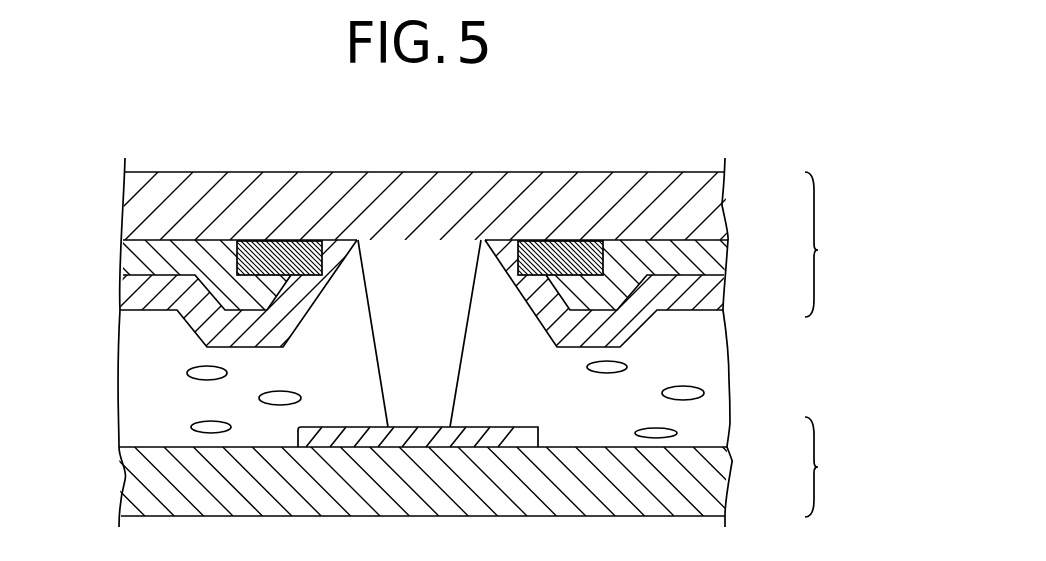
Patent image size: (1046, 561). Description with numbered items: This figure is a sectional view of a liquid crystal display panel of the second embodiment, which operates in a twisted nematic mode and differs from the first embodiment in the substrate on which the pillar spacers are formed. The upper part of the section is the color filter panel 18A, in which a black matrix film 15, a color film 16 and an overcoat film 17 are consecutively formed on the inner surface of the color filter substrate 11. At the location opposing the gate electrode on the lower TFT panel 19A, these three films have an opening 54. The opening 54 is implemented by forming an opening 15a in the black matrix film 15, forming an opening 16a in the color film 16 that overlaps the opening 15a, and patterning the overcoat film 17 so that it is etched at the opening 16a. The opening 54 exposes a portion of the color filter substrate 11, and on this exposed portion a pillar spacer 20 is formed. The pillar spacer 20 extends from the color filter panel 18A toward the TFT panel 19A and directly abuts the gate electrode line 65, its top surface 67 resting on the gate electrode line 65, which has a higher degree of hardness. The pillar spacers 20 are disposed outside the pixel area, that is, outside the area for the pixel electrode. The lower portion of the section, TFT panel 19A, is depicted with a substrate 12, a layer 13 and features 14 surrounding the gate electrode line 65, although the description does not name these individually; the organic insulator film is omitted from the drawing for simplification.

The color filter substrate 11 is at (703, 202).
The substrate 12 is at (708, 482).
The porous insulating layer 13 is at (717, 380).
The pores 14 is at (683, 397).
The black matrix film 15 is at (563, 256).
The opening in the black matrix film 15a is at (337, 242).
The color film 16 is at (718, 253).
The opening in the color film 16a is at (524, 299).
The overcoat film 17 is at (712, 295).
The color filter panel 18A is at (842, 244).
The TFT panel 19A is at (840, 467).
The pillar spacer 20 is at (440, 370).
The opening 54 is at (350, 278).
The gate electrode line 65 is at (538, 438).
The top surface of the pillar spacer 67 is at (381, 419).